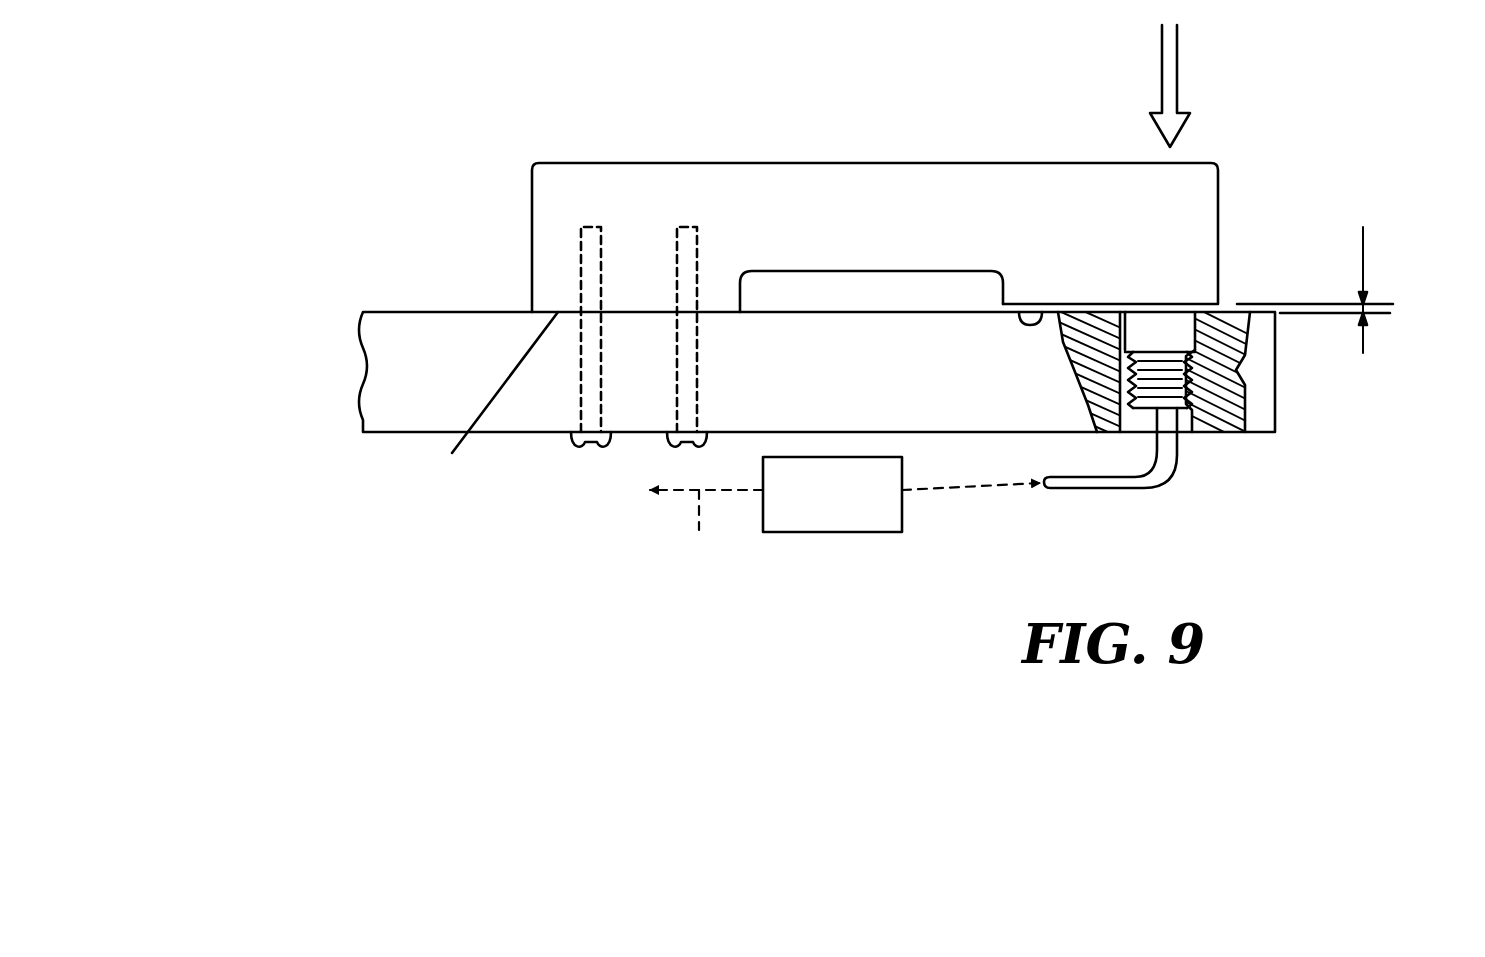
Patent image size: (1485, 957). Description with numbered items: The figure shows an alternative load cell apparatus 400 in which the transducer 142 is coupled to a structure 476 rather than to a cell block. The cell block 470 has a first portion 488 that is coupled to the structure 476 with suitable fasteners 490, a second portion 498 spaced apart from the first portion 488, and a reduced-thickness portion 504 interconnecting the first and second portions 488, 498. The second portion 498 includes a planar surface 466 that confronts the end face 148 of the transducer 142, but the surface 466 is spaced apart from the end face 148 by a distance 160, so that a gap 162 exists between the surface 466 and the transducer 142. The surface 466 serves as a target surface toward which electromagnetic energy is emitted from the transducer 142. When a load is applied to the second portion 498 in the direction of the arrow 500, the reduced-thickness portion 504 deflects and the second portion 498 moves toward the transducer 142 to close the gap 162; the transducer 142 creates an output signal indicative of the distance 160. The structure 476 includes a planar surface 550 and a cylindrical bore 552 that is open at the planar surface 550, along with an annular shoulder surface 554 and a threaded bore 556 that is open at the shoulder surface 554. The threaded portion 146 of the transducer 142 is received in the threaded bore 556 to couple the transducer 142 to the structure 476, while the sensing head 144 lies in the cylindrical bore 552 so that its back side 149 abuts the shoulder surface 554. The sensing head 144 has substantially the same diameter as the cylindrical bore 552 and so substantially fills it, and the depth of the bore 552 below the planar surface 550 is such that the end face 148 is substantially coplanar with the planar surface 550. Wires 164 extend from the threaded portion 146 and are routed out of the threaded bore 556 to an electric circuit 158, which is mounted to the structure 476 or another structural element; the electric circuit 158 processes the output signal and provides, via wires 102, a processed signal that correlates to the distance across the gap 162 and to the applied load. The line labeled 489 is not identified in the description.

The load cell apparatus 400 is at (300, 176).
The cell block 470 is at (533, 130).
The first portion 488 is at (645, 187).
The second portion 498 is at (1100, 185).
The reduced-thickness portion 504 is at (858, 208).
The arrow 500 is at (1180, 66).
The structure 476 is at (467, 327).
The planar surface 550 is at (378, 306).
The plate edge 489 is at (475, 393).
The fasteners 490 is at (667, 440).
The planar surface 466 is at (1028, 308).
The cylindrical bore 552 is at (1197, 300).
The end face 148 is at (1150, 300).
The gap 162 is at (1230, 297).
The distance 160 is at (1363, 250).
The transducer 142 is at (1100, 332).
The sensing head 144 is at (1133, 337).
The annular shoulder surface 554 is at (1245, 370).
The threaded portion 146 is at (1245, 388).
The back side 149 is at (1126, 428).
The threaded bore 556 is at (1178, 432).
The wires 164 is at (1105, 490).
The electric circuit 158 is at (865, 512).
The wires 102 is at (706, 531).